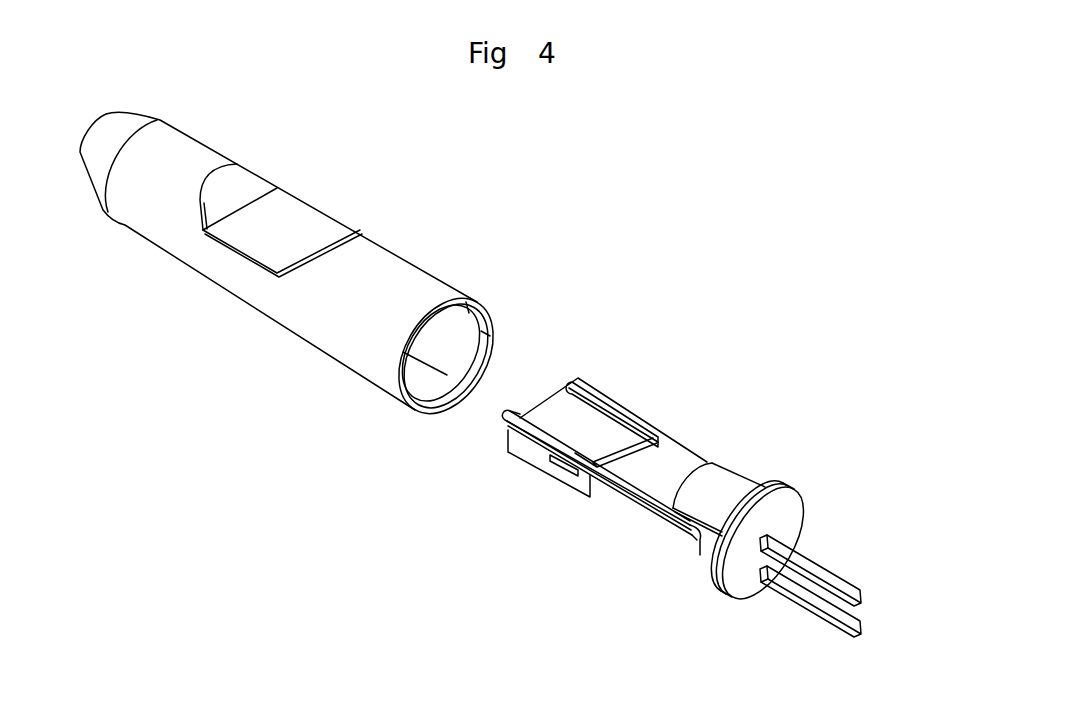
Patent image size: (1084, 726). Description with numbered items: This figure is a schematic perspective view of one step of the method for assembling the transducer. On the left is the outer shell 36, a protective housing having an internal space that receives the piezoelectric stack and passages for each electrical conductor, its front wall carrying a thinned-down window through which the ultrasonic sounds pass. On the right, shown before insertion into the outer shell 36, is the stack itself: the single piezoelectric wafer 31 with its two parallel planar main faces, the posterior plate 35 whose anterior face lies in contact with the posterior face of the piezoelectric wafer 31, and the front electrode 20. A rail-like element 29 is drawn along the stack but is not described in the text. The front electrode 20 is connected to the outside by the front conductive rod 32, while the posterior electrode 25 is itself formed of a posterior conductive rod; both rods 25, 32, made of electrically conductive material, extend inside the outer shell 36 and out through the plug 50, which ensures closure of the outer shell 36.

The outer shell 36 is at (403, 277).
The piezoelectric wafer 31 is at (568, 420).
The guide rail 29 is at (587, 415).
The posterior plate 35 is at (557, 470).
The front electrode 20 is at (668, 467).
The plug 50 is at (788, 520).
The front conductive rod 32 is at (817, 568).
The posterior electrode 25 is at (808, 605).